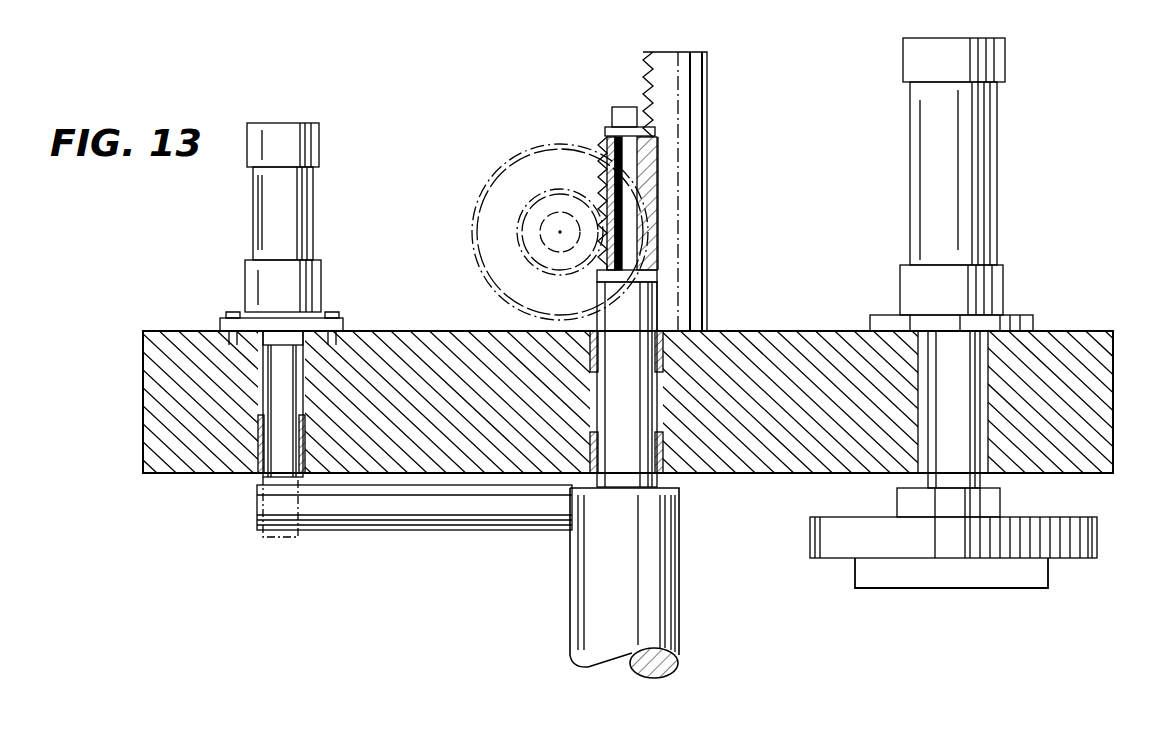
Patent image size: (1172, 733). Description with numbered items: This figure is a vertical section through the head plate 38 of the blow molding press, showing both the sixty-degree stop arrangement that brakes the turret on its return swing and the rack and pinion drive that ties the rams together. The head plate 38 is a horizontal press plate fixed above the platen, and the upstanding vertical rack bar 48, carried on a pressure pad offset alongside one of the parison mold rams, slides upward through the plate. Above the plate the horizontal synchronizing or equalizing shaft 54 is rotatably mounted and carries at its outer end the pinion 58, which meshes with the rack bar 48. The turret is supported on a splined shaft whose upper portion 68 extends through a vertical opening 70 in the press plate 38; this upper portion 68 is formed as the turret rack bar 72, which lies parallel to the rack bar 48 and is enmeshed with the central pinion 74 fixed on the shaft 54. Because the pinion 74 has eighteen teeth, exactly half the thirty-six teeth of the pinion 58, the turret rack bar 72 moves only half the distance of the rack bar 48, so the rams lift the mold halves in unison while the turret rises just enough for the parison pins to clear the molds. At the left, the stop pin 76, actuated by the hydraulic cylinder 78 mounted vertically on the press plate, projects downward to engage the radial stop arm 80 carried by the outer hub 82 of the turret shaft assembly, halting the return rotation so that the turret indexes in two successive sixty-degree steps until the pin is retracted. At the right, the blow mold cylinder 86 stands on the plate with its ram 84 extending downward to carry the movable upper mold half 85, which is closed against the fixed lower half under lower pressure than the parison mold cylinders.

The head plate 38 is at (1060, 340).
The rack bar 48 is at (690, 147).
The synchronizing or equalizing shaft 54 is at (556, 238).
The pinion 58 is at (523, 175).
The upper portion of splined shaft 68 is at (640, 480).
The vertical opening 70 is at (658, 383).
The turret rack bar 72 is at (603, 137).
The pinion 74 is at (517, 235).
The stop pin 76 is at (272, 475).
The hydraulic cylinder 78 is at (310, 235).
The radial stop arm 80 is at (472, 513).
The outer hub 82 is at (655, 596).
The ram 84 is at (960, 423).
The movable upper mold half 85 is at (1018, 575).
The blow mold cylinder 86 is at (935, 168).